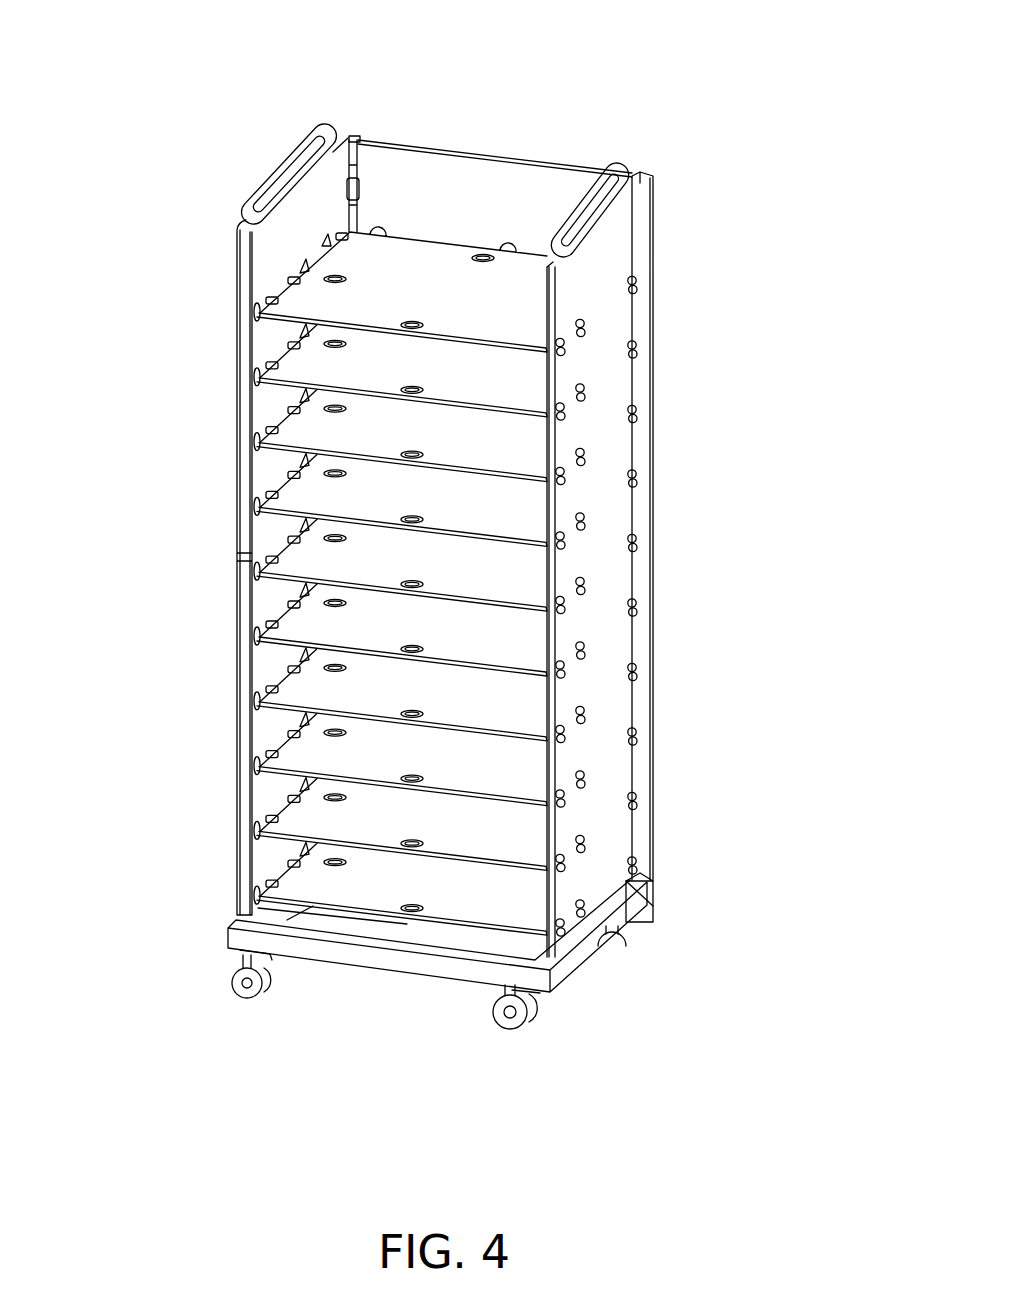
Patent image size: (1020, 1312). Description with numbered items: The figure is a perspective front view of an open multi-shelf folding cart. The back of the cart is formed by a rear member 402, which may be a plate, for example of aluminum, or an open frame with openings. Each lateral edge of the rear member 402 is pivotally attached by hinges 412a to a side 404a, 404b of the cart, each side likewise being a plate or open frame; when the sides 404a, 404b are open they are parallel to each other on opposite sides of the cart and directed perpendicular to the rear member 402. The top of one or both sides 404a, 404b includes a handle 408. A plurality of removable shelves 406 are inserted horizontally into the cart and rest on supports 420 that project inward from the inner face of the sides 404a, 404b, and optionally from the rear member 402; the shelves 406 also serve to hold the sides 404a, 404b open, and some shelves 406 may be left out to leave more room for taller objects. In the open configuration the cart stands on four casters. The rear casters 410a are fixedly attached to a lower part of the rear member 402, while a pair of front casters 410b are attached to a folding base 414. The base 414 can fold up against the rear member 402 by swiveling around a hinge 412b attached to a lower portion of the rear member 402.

The rear member 402 is at (487, 180).
The side 404a is at (236, 466).
The side 404b is at (607, 390).
The removable shelf 406 is at (522, 297).
The handle 408 is at (290, 143).
The rear caster 410a is at (622, 938).
The front caster 410b is at (237, 970).
The hinge 412a is at (348, 145).
The hinge 412b is at (625, 892).
The folding base 414 is at (398, 985).
The support 420 is at (292, 407).